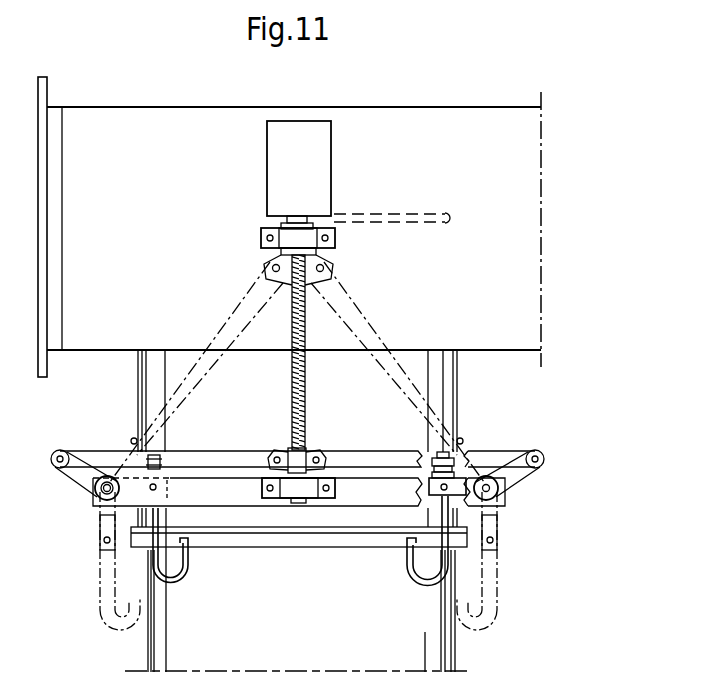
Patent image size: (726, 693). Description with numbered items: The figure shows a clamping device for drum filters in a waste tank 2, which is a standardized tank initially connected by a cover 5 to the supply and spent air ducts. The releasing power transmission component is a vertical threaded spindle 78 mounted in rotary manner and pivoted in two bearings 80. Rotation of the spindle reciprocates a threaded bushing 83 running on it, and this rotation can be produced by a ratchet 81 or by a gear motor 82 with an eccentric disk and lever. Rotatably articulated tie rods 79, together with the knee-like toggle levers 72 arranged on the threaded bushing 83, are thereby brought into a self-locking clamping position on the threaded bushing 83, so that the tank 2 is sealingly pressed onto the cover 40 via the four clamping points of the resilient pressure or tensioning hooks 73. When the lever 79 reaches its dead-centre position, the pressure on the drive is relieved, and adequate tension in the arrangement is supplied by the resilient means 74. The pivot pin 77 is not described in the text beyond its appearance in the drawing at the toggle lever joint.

The waste tank 2 is at (360, 540).
The cover 5 is at (223, 520).
The cover 40 is at (138, 385).
The toggle lever 72 is at (80, 477).
The tensioning hook 73 is at (427, 578).
The resilient means 74 is at (433, 456).
The pivot pin 77 is at (103, 507).
The threaded spindle 78 is at (300, 308).
The tie rod 79 is at (498, 455).
The bearing 80 is at (334, 236).
The ratchet 81 is at (415, 215).
The gear motor 82 is at (280, 160).
The threaded bushing 83 is at (301, 454).